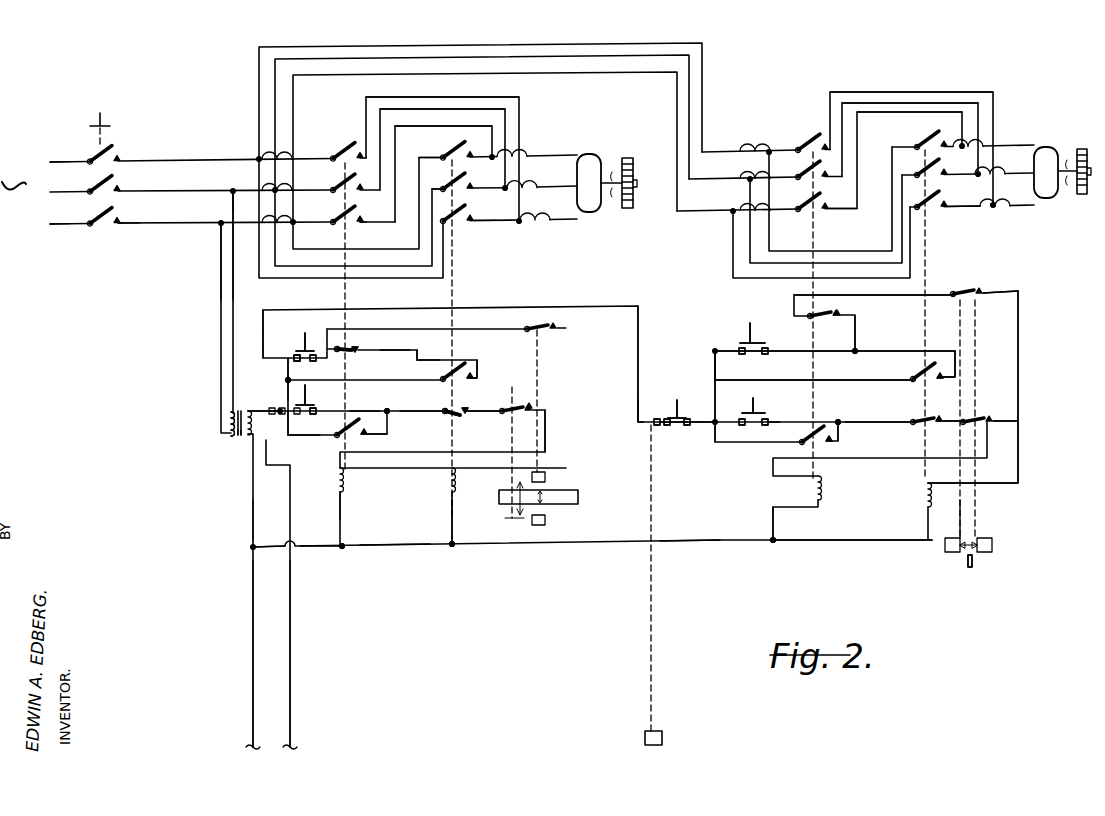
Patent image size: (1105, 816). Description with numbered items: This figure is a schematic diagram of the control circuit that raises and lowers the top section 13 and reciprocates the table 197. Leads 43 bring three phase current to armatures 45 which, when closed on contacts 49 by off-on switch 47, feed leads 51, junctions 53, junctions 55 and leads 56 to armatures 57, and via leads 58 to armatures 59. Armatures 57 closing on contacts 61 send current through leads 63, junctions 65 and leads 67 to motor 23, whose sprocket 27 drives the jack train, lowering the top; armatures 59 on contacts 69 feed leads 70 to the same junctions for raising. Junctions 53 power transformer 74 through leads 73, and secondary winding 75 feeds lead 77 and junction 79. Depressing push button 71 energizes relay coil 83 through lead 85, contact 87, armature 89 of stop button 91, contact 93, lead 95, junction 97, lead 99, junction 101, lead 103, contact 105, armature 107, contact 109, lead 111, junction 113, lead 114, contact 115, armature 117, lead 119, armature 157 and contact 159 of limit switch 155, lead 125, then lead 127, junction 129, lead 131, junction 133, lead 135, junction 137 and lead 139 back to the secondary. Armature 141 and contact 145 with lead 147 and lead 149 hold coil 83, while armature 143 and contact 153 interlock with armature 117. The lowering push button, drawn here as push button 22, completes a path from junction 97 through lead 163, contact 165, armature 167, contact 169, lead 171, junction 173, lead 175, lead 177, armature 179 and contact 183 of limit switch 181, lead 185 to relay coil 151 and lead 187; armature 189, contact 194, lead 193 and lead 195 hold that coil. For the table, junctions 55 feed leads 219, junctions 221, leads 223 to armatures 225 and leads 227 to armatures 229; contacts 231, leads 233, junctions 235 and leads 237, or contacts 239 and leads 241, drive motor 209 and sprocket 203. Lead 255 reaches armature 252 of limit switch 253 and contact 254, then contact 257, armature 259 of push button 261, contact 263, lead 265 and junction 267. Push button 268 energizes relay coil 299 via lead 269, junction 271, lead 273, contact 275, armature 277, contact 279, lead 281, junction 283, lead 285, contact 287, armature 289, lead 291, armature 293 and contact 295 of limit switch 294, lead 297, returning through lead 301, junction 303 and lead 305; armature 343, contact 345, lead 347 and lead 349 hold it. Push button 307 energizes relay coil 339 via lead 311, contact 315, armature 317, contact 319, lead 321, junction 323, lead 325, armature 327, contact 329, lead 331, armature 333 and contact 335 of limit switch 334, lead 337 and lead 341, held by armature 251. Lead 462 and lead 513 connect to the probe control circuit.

The top section 13 is at (578, 497).
The push button switch 22 is at (306, 386).
The motor 23 is at (592, 160).
The sprocket 27 is at (630, 168).
The leads 43 is at (50, 170).
The armatures 45 is at (92, 225).
The off-on switch 47 is at (100, 114).
The contacts 49 is at (114, 163).
The leads 51 is at (120, 225).
The junctions 53 is at (233, 192).
The junctions 55 is at (262, 162).
The leads 56 is at (312, 190).
The armatures 57 is at (330, 205).
The leads 58 is at (405, 278).
The armatures 59 is at (440, 162).
The contacts 61 is at (358, 200).
The leads 63 is at (450, 125).
The junctions 65 is at (498, 156).
The leads 67 is at (545, 218).
The contacts 69 is at (468, 222).
The leads 70 is at (499, 222).
The push button 71 is at (306, 333).
The leads 73 is at (223, 275).
The transformer 74 is at (240, 437).
The secondary winding 75 is at (280, 413).
The lead 77 is at (287, 411).
The junction 79 is at (286, 410).
The relay coil 83 is at (450, 483).
The lead 85 is at (285, 409).
The contact 87 is at (275, 415).
The armature 89 is at (284, 408).
The stop button 91 is at (282, 407).
The contact 93 is at (278, 416).
The lead 95 is at (281, 417).
The junction 97 is at (290, 420).
The lead 99 is at (280, 405).
The junction 101 is at (290, 380).
The lead 103 is at (290, 358).
The contact 105 is at (297, 357).
The armature 107 is at (305, 333).
The contact 109 is at (314, 357).
The lead 111 is at (378, 360).
The junction 113 is at (421, 360).
The lead 114 is at (394, 350).
The contact 115 is at (357, 349).
The armature 117 is at (359, 350).
The lead 119 is at (420, 329).
The lead 125 is at (566, 357).
The lead 127 is at (452, 521).
The junction 129 is at (452, 546).
The lead 131 is at (385, 544).
The junction 133 is at (342, 548).
The lead 135 is at (300, 547).
The junction 137 is at (253, 549).
The lead 139 is at (253, 531).
The armature 141 is at (461, 365).
The armature 143 is at (458, 415).
The contact 145 is at (472, 377).
The lead 147 is at (449, 379).
The lead 149 is at (447, 358).
The relay coil 151 is at (345, 478).
The contact 153 is at (455, 410).
The limit switch 155 is at (545, 477).
The armature 157 is at (547, 325).
The contact 159 is at (552, 327).
The lead 163 is at (293, 422).
The contact 165 is at (296, 422).
The armature 167 is at (313, 408).
The contact 169 is at (300, 424).
The lead 171 is at (365, 411).
The junction 173 is at (388, 412).
The lead 175 is at (420, 411).
The lead 177 is at (482, 412).
The armature 179 is at (512, 408).
The limit switch 181 is at (545, 520).
The contact 183 is at (532, 408).
The lead 185 is at (546, 430).
The lead 187 is at (342, 512).
The armature 189 is at (360, 419).
The lead 193 is at (345, 428).
The contact 194 is at (365, 435).
The lead 195 is at (389, 435).
The table 197 is at (970, 568).
The sprocket 203 is at (1082, 195).
The motor 209 is at (1045, 150).
The leads 219 is at (524, 75).
The junctions 221 is at (775, 150).
The leads 223 is at (798, 212).
The armatures 225 is at (800, 150).
The leads 227 is at (835, 278).
The armatures 229 is at (917, 205).
The contacts 231 is at (828, 210).
The leads 233 is at (872, 92).
The junctions 235 is at (990, 207).
The leads 237 is at (1022, 208).
The contacts 239 is at (947, 208).
The leads 241 is at (940, 145).
The armature 251 is at (808, 440).
The armature 252 is at (657, 420).
The limit switch 253 is at (802, 443).
The contact 254 is at (657, 425).
The lead 255 is at (665, 425).
The contact 257 is at (677, 425).
The armature 259 is at (687, 420).
The push button 261 is at (677, 400).
The contact 263 is at (673, 425).
The lead 265 is at (682, 425).
The junction 267 is at (687, 425).
The push button 268 is at (746, 321).
The lead 269 is at (752, 406).
The junction 271 is at (716, 380).
The lead 273 is at (715, 353).
The contact 275 is at (742, 350).
The armature 277 is at (757, 348).
The contact 279 is at (768, 351).
The lead 281 is at (826, 352).
The junction 283 is at (857, 351).
The lead 285 is at (856, 322).
The contact 287 is at (820, 318).
The armature 289 is at (836, 320).
The lead 291 is at (805, 316).
The armature 293 is at (962, 292).
The limit switch 294 is at (950, 553).
The contact 295 is at (970, 297).
The lead 297 is at (1020, 375).
The relay coil 299 is at (928, 496).
The lead 301 is at (852, 541).
The junction 303 is at (773, 545).
The lead 305 is at (688, 541).
The push button 307 is at (756, 412).
The lead 311 is at (705, 425).
The contact 315 is at (742, 420).
The armature 317 is at (766, 420).
The contact 319 is at (770, 422).
The lead 321 is at (838, 420).
The junction 323 is at (840, 421).
The lead 325 is at (868, 423).
The armature 327 is at (913, 420).
The contact 329 is at (930, 428).
The lead 331 is at (941, 421).
The armature 333 is at (990, 420).
The limit switch 334 is at (992, 545).
The contact 335 is at (1010, 421).
The lead 337 is at (980, 465).
The relay coil 339 is at (825, 490).
The lead 341 is at (773, 528).
The armature 343 is at (925, 374).
The contact 345 is at (945, 377).
The lead 347 is at (850, 380).
The lead 349 is at (942, 375).
The lead 462 is at (290, 655).
The lead 513 is at (253, 660).